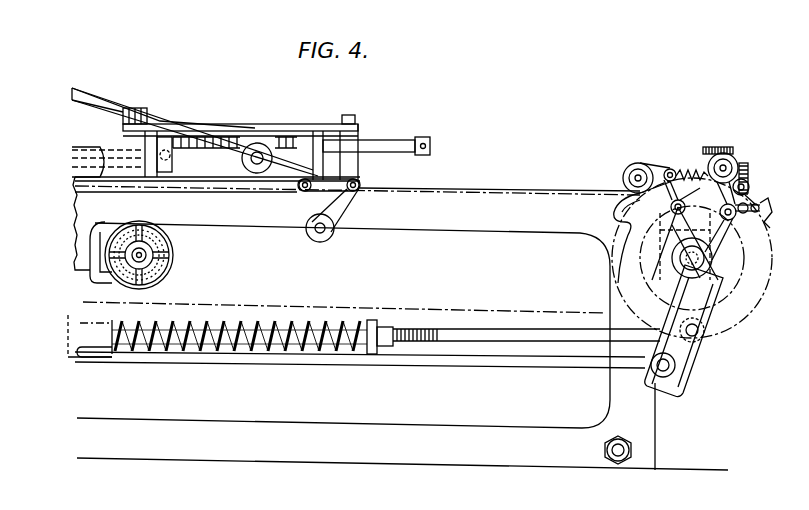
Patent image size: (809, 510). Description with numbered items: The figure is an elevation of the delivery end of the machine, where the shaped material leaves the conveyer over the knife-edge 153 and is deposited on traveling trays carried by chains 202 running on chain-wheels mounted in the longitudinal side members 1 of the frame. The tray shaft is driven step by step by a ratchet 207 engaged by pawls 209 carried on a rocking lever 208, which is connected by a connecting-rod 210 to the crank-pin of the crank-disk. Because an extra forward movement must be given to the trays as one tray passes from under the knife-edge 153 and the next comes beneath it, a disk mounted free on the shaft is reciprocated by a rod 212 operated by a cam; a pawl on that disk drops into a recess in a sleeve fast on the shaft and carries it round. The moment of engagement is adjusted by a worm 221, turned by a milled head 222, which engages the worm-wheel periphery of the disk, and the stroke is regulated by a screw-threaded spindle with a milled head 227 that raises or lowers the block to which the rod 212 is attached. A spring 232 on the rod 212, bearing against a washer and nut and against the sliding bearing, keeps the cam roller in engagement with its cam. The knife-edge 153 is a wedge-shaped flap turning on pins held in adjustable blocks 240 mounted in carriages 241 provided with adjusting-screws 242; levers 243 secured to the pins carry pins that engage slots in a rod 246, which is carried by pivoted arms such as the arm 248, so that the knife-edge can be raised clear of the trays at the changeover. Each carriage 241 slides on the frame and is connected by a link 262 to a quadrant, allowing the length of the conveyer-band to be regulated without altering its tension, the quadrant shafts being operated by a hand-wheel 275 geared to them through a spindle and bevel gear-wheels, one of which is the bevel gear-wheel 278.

The longitudinal side member 1 is at (476, 224).
The knife-edge 153 is at (303, 178).
The chains 202 is at (507, 193).
The ratchet 207 is at (617, 217).
The rocking lever 208 is at (681, 390).
The pawls 209 is at (633, 168).
The connecting-rod 210 is at (441, 362).
The rod 212 is at (502, 313).
The worm 221 is at (712, 173).
The milled head 222 is at (748, 165).
The milled head 227 is at (732, 141).
The spring 232 is at (268, 328).
The adjustable blocks 240 is at (244, 142).
The carriages 241 is at (187, 124).
The adjusting-screws 242 is at (388, 145).
The levers 243 is at (290, 182).
The rod 246 is at (205, 182).
The arm 248 is at (341, 205).
The link 262 is at (82, 152).
The hand-wheel 275 is at (173, 253).
The bevel gear-wheel 278 is at (105, 272).